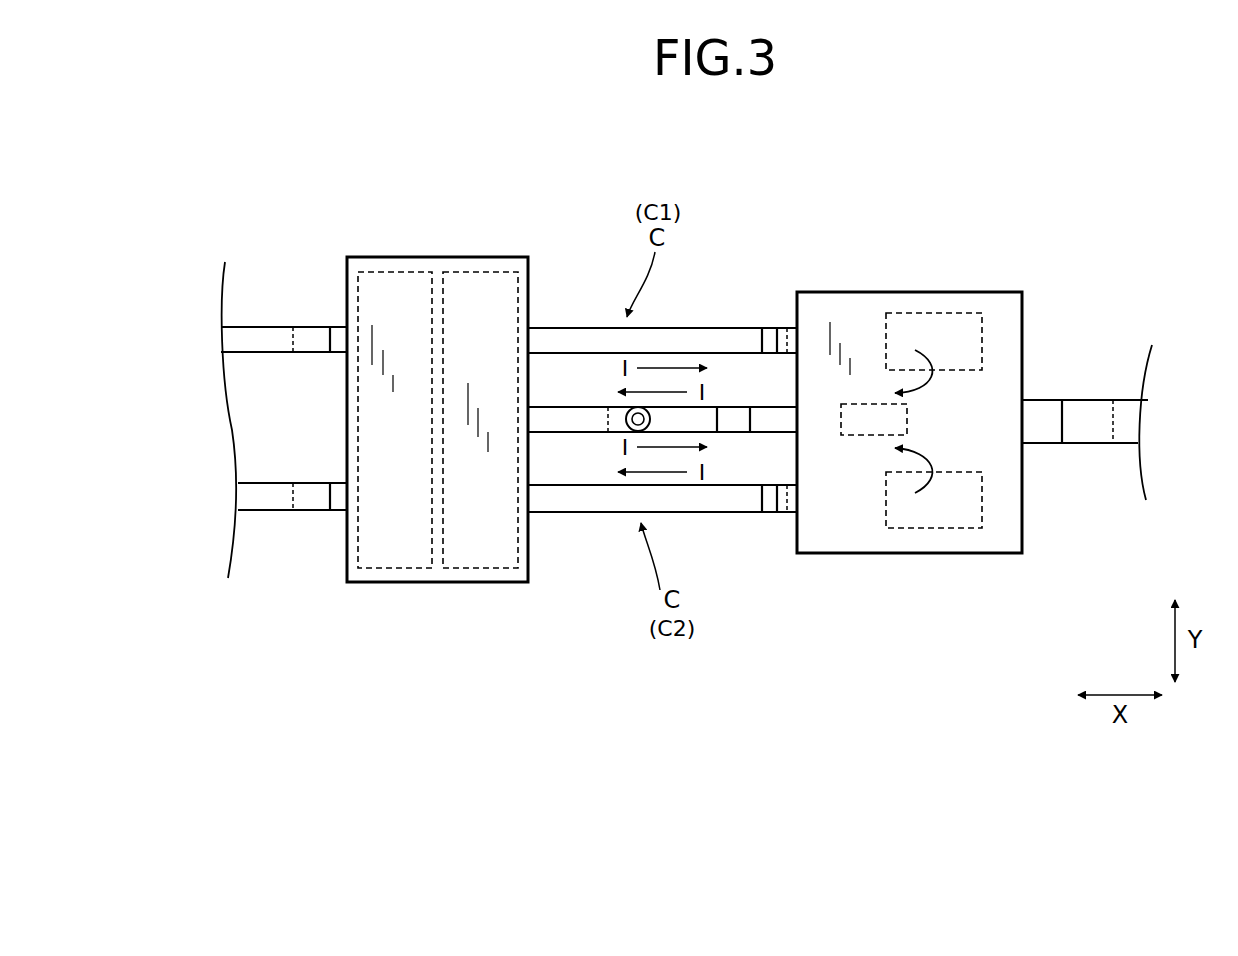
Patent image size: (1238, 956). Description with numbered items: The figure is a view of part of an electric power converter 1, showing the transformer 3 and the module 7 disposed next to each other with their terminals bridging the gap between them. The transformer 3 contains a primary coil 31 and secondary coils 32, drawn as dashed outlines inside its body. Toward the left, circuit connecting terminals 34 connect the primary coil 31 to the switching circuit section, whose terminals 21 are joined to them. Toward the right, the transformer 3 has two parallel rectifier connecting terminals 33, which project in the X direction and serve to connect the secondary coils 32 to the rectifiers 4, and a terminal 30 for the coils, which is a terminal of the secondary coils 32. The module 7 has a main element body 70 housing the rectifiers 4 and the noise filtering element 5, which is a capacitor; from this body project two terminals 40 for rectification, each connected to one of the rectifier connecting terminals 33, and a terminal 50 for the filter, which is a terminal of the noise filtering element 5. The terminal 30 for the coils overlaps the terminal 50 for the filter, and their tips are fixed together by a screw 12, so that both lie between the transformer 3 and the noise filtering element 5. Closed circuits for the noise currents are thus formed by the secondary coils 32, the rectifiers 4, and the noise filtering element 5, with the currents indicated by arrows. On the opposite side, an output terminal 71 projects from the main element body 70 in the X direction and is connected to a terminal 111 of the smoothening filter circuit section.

The electric power converter 1 is at (1072, 138).
The transformer 3 is at (437, 268).
The rectifiers 4 is at (963, 612).
The noise filtering element 5 is at (853, 413).
The module 7 is at (941, 402).
The screw 12 is at (640, 406).
The terminals of the switching circuit section 21 is at (257, 497).
The terminal for the coils 30 is at (583, 418).
The primary coil 31 is at (397, 280).
The secondary coils 32 is at (483, 282).
The rectifier connecting terminals 33 is at (615, 680).
The circuit connecting terminals 34 is at (338, 497).
The terminals for rectification 40 is at (810, 683).
The terminal for the filter 50 is at (733, 423).
The main element body 70 is at (893, 303).
The output terminal 71 is at (1035, 425).
The terminal of the smoothening filter circuit section 111 is at (1123, 417).